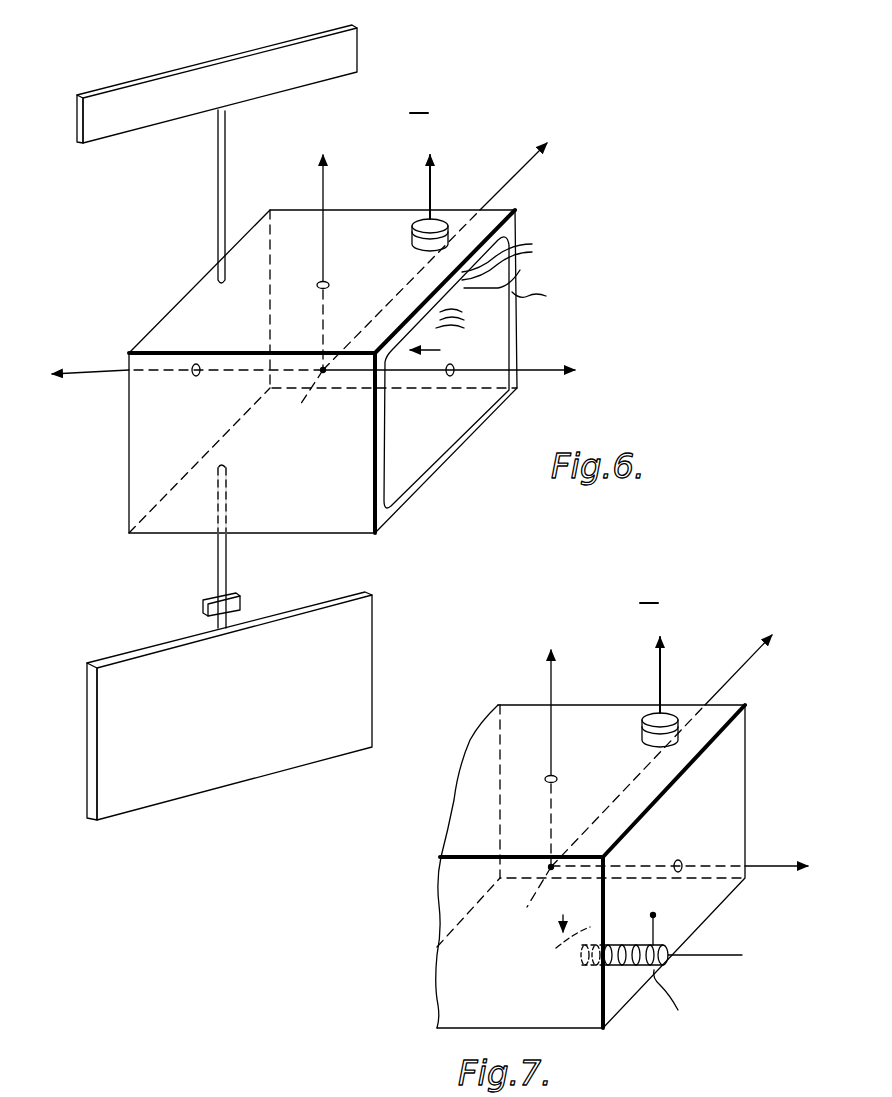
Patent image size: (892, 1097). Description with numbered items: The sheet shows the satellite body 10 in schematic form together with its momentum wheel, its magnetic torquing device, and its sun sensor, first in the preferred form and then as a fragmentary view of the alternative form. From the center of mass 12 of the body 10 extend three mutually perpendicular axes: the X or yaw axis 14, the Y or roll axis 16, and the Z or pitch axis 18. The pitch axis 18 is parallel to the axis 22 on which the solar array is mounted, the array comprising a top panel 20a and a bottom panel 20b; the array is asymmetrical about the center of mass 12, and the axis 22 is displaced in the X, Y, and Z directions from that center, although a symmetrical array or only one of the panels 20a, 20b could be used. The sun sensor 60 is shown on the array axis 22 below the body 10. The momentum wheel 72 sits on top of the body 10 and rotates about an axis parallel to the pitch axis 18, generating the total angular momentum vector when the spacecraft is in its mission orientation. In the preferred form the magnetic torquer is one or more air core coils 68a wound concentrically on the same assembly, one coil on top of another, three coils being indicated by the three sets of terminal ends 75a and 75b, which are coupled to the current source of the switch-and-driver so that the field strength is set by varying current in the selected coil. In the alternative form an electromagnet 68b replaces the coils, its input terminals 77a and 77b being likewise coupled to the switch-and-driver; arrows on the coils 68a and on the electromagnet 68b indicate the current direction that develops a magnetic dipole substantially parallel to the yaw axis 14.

In FIG. 6, the body 10 is at (181, 300).
In FIG. 6, the center of mass 12 is at (305, 405).
In FIG. 7, the center of mass 12 is at (529, 903).
In FIG. 6, the yaw axis 14 is at (94, 374).
In FIG. 7, the yaw axis 14 is at (765, 866).
In FIG. 6, the roll axis 16 is at (498, 186).
In FIG. 7, the roll axis 16 is at (731, 680).
In FIG. 6, the pitch axis 18 is at (324, 246).
In FIG. 7, the pitch axis 18 is at (549, 742).
In FIG. 6, the top panel of solar array 20a is at (358, 52).
In FIG. 6, the bottom panel of solar array 20b is at (374, 628).
In FIG. 6, the solar array axis 22 is at (218, 163).
In FIG. 6, the sun sensor 60 is at (203, 606).
In FIG. 6, the air core coil 68a is at (510, 264).
In FIG. 7, the electromagnet 68b is at (628, 972).
In FIG. 6, the momentum wheel 72 is at (413, 241).
In FIG. 7, the momentum wheel 72 is at (642, 742).
In FIG. 6, the input terminal of coil 75a is at (519, 255).
In FIG. 6, the input terminal of coil 75b is at (473, 322).
In FIG. 7, the input terminal of electromagnet 77a is at (557, 951).
In FIG. 7, the input terminal of electromagnet 77b is at (656, 934).